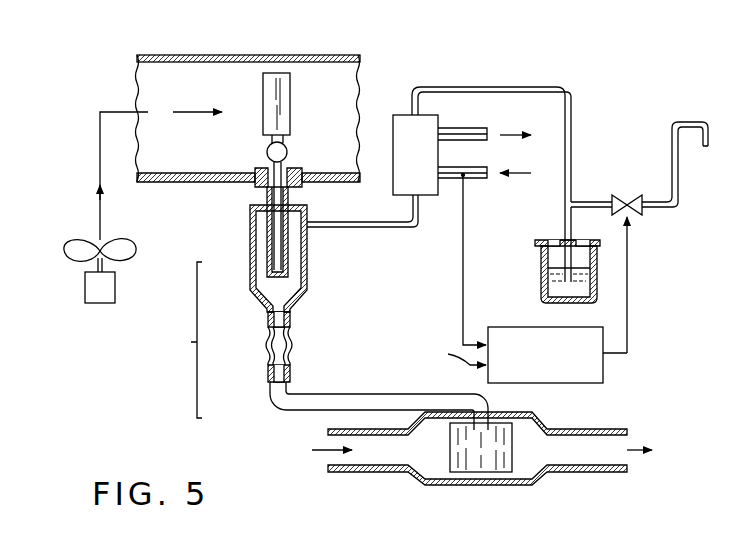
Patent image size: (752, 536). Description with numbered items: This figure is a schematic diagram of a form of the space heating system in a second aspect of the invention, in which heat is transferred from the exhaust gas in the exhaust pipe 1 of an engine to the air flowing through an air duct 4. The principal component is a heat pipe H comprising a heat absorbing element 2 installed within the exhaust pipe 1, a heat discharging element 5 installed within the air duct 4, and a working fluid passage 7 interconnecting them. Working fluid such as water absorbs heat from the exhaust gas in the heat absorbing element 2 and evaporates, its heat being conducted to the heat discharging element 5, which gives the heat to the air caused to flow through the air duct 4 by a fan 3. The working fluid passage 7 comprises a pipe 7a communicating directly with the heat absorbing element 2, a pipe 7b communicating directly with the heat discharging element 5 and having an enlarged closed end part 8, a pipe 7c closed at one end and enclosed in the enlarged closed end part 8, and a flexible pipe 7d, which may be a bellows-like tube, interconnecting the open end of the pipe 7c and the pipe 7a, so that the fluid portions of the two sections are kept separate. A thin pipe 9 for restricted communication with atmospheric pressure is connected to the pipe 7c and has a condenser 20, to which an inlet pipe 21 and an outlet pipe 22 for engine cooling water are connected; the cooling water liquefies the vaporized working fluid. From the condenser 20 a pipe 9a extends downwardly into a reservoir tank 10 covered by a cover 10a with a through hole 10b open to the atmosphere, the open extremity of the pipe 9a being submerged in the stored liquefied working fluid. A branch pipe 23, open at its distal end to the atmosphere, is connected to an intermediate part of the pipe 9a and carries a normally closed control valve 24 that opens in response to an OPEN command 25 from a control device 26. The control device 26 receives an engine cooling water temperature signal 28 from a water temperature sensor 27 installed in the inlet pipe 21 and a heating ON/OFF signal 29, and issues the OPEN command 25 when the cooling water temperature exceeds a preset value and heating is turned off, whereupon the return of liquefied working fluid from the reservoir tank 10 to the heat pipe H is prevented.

The exhaust pipe 1 is at (372, 473).
The heat absorbing element 2 is at (507, 468).
The fan 3 is at (74, 246).
The air duct 4 is at (152, 57).
The heat discharging element 5 is at (291, 112).
The working fluid passage 7 is at (272, 276).
The pipe 7a is at (342, 398).
The pipe 7b is at (272, 187).
The pipe 7c is at (307, 271).
The flexible pipe 7d is at (267, 351).
The enlarged closed end part 8 is at (267, 251).
The thin pipe 9 is at (372, 228).
The pipe 9a is at (568, 88).
The reservoir tank 10 is at (579, 268).
The cover 10a is at (537, 243).
The through hole 10b is at (580, 240).
The condenser 20 is at (398, 110).
The inlet pipe 21 is at (478, 179).
The outlet pipe 22 is at (478, 128).
The branch pipe 23 is at (687, 121).
The control valve 24 is at (623, 194).
The OPEN command 25 is at (630, 294).
The control device 26 is at (605, 373).
The water temperature sensor 27 is at (462, 178).
The engine cooling water temperature signal 28 is at (462, 290).
The heating ON/OFF signal 29 is at (451, 353).
The heat pipe H is at (184, 356).